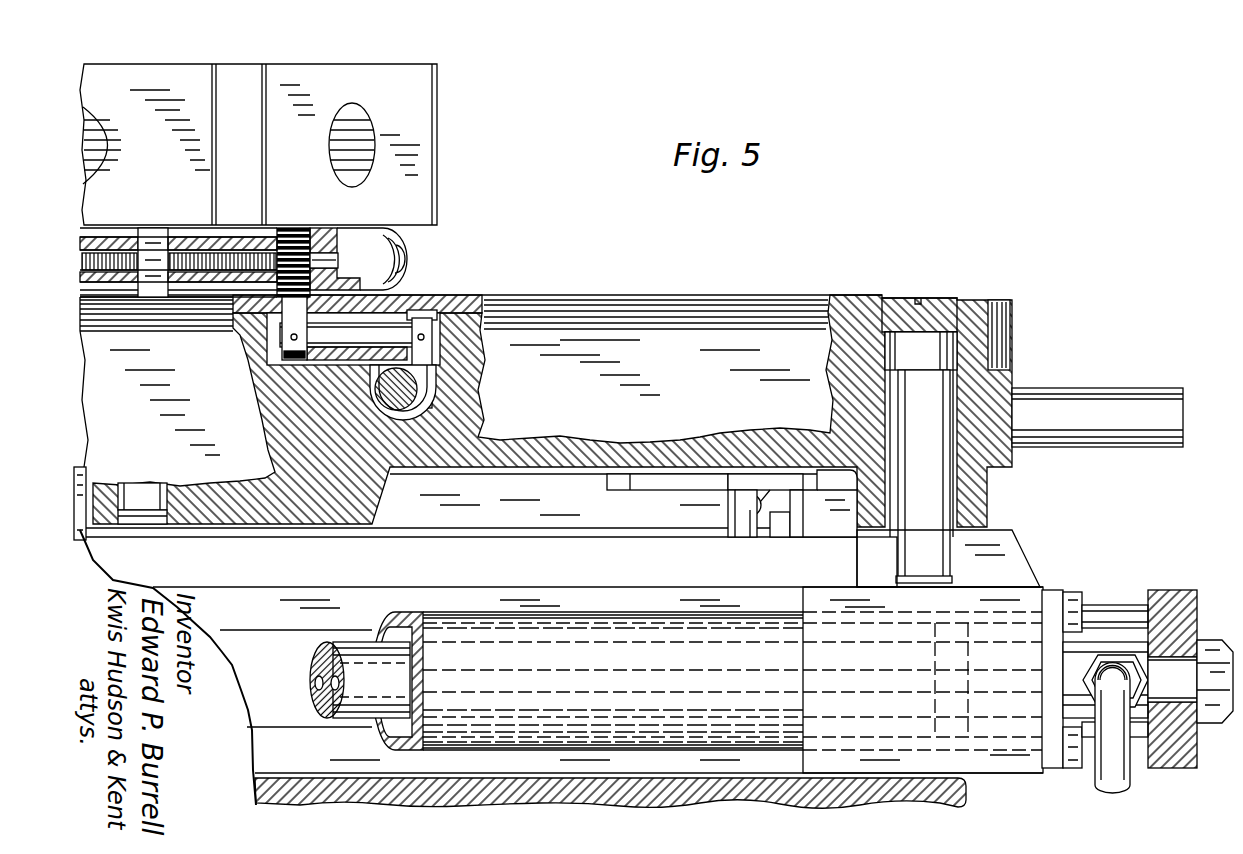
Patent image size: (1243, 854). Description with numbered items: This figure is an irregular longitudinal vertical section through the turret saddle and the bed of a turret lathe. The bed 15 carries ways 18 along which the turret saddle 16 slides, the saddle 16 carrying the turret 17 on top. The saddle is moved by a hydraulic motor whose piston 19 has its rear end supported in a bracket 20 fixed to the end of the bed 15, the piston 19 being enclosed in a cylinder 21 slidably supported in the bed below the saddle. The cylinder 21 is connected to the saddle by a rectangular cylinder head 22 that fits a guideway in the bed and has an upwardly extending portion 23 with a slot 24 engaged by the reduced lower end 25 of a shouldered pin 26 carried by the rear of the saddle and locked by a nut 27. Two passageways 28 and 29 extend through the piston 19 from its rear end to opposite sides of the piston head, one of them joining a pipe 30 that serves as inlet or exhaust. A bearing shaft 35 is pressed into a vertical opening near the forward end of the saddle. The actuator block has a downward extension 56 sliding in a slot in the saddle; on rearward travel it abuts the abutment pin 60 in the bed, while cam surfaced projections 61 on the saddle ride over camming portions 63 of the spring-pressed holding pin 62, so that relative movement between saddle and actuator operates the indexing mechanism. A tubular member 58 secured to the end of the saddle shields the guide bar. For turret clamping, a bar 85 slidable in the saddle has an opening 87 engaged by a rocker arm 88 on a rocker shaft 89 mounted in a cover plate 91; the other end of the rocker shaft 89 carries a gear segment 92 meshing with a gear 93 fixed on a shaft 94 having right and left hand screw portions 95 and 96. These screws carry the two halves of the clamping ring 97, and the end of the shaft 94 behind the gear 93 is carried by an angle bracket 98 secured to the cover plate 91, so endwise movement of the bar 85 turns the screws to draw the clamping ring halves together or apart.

The bed 15 is at (673, 799).
The turret saddle 16 is at (680, 437).
The turret 17 is at (435, 145).
The ways 18 is at (80, 467).
The piston 19 is at (350, 647).
The bracket 20 is at (1170, 595).
The cylinder 21 is at (425, 620).
The cylinder head 22 is at (1005, 760).
The upwardly extending portion 23 is at (1010, 557).
The slot 24 is at (950, 578).
The reduced lower end 25 is at (935, 555).
The shouldered pin 26 is at (940, 392).
The nut 27 is at (940, 303).
The passageway 28 is at (313, 688).
The passageway 29 is at (327, 693).
The pipe 30 is at (1120, 776).
The bearing shaft 35 is at (142, 503).
The downward extension 56 is at (642, 484).
The tubular member 58 is at (1113, 388).
The abutment pin 60 is at (820, 476).
The cam surfaced projections 61 is at (772, 497).
The spring-pressed holding pin 62 is at (735, 519).
The camming portions 63 is at (739, 502).
The bar 85 is at (388, 390).
The opening 87 is at (430, 418).
The rocker arm 88 is at (428, 294).
The rocker shaft 89 is at (353, 339).
The cover plate 91 is at (414, 300).
The gear segment 92 is at (283, 318).
The gear 93 is at (298, 240).
The shaft 94 is at (338, 259).
The right hand screw portion 95 is at (217, 257).
The left hand screw portion 96 is at (107, 240).
The clamping ring halves 97 is at (400, 245).
The angle bracket 98 is at (327, 232).